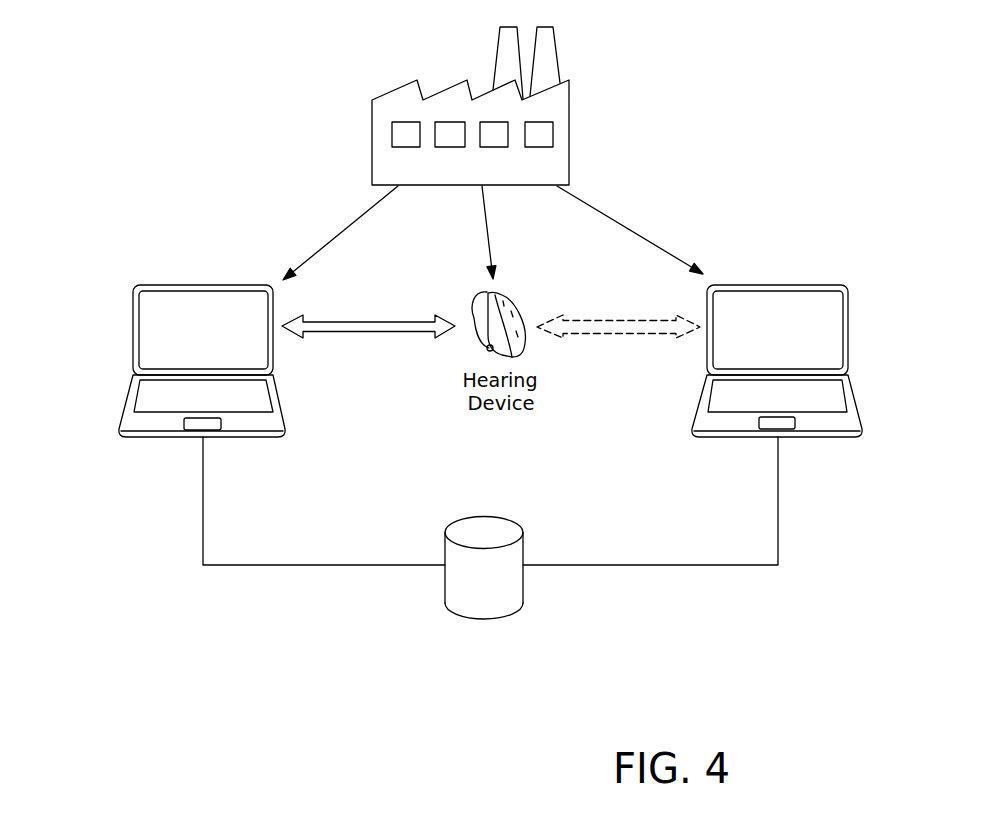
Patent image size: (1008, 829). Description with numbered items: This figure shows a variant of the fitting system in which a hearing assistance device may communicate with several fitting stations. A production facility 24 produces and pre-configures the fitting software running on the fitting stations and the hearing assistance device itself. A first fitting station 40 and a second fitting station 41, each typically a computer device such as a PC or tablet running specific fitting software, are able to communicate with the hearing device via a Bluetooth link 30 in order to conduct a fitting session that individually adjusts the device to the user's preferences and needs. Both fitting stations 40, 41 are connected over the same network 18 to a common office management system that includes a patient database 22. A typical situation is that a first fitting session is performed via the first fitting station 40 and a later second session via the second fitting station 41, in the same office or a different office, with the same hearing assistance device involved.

The production facility 24 is at (568, 110).
The fitting station 40 is at (153, 317).
The second fitting station 41 is at (810, 310).
The Bluetooth link 30 is at (370, 332).
The network 18 is at (285, 567).
The patient database 22 is at (518, 585).